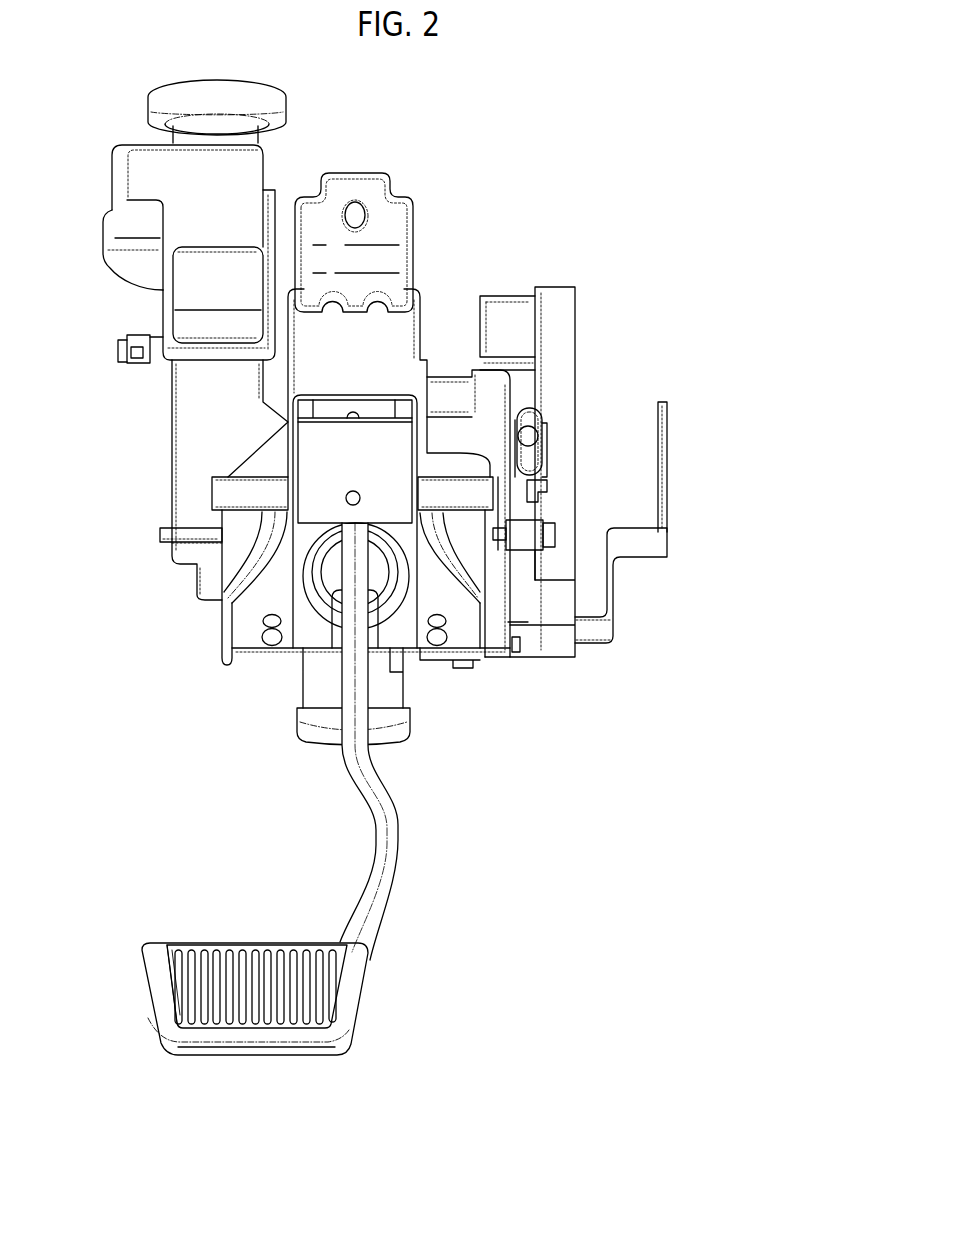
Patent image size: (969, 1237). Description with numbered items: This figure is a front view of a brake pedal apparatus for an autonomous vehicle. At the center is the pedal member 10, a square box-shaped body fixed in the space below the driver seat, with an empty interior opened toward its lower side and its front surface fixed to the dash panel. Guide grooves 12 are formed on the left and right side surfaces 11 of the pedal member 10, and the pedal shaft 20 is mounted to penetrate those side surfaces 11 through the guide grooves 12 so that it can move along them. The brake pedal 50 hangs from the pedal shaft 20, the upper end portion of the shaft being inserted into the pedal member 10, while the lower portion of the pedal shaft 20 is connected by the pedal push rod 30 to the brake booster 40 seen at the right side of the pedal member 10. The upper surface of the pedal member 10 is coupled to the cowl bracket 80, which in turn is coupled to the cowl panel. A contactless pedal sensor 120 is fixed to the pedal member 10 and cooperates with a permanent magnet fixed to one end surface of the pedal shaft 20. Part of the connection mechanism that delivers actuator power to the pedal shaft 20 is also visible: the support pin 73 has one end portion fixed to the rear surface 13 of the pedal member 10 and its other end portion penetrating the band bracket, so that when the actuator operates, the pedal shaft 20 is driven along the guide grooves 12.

The pedal member 10 is at (210, 648).
The left and right side surfaces 11 is at (220, 537).
The guide grooves 12 is at (220, 570).
The rear surface 13 is at (318, 445).
The pedal shaft 20 is at (227, 495).
The pedal push rod 30 is at (390, 588).
The brake booster 40 is at (565, 345).
The brake pedal 50 is at (392, 903).
The support pin 73 is at (363, 498).
The cowl bracket 80 is at (362, 192).
The contactless pedal sensor 120 is at (543, 478).